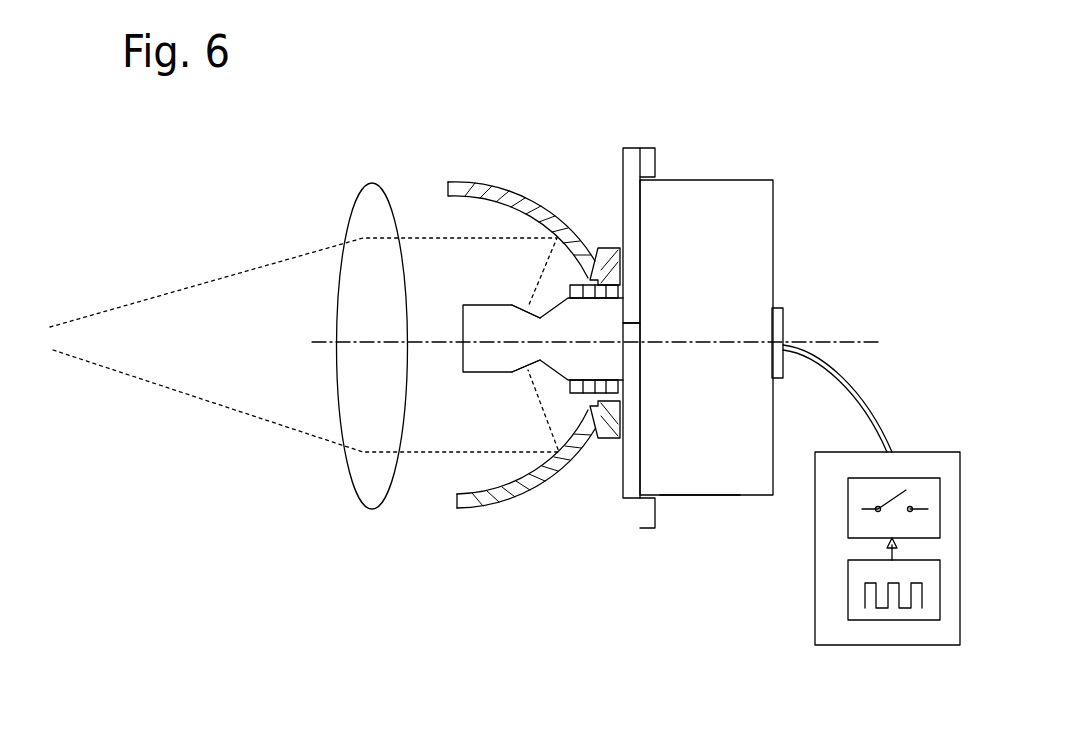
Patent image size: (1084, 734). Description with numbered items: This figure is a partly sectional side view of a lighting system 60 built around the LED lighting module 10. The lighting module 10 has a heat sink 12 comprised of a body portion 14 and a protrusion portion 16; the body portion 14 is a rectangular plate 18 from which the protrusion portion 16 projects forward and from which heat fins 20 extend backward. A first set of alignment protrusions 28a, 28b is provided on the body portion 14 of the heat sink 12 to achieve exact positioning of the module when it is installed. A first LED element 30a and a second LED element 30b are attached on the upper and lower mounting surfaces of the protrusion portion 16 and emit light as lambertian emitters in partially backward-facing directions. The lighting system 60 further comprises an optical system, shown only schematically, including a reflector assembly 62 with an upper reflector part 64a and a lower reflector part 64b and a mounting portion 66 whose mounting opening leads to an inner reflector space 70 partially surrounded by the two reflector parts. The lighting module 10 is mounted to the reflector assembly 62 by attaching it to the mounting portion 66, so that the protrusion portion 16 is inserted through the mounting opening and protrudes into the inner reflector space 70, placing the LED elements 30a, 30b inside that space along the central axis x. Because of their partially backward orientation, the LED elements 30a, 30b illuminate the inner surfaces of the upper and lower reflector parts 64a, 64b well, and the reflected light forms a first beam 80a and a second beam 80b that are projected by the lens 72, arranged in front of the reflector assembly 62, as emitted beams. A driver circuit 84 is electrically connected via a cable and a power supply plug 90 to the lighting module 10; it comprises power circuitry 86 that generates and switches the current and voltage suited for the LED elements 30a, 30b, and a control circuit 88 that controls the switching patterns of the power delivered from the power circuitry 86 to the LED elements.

The LED lighting module 10 is at (675, 92).
The heat sink 12 is at (616, 550).
The body portion 14 is at (697, 497).
The protrusion portion 16 is at (460, 407).
The rectangular plate 18 is at (623, 207).
The heat fins 20 is at (744, 337).
The alignment protrusion 28a is at (652, 163).
The alignment protrusion 28b is at (640, 530).
The first LED element 30a is at (531, 311).
The second LED element 30b is at (528, 372).
The lighting system 60 is at (186, 161).
The reflector assembly 62 is at (500, 127).
The upper reflector part 64a is at (487, 183).
The lower reflector part 64b is at (458, 508).
The mounting portion 66 is at (592, 440).
The inner reflector space 70 is at (449, 301).
The lens 72 is at (365, 207).
The first beam 80a is at (70, 323).
The second beam 80b is at (203, 400).
The driver circuit 84 is at (942, 452).
The power circuitry 86 is at (847, 515).
The control circuit 88 is at (847, 587).
The power supply plug 90 is at (785, 342).
The optical axis x is at (868, 342).